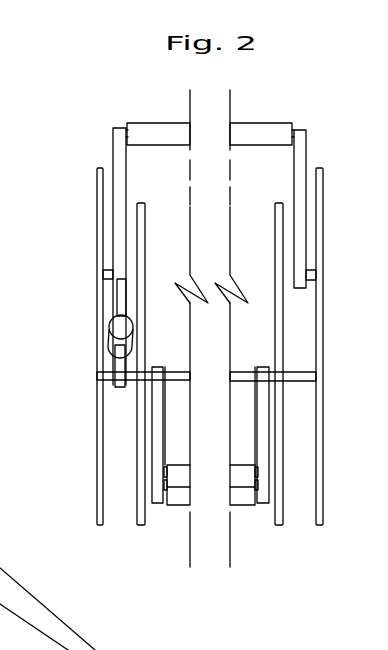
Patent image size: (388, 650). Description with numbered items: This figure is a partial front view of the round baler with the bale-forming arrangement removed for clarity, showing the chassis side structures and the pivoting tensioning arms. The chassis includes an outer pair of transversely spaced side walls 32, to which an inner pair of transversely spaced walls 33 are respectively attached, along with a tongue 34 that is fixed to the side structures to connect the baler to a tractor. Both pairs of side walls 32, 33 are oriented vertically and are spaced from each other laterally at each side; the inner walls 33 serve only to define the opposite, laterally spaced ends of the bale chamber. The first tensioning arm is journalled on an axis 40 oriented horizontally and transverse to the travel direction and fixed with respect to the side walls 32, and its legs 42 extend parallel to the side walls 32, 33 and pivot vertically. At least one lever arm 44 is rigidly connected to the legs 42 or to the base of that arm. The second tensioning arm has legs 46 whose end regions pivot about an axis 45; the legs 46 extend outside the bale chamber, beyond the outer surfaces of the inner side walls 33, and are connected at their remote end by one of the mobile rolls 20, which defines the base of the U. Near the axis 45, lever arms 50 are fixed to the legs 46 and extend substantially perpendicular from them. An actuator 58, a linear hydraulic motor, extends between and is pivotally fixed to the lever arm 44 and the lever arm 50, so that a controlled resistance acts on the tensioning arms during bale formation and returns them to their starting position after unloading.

The mobile roll 20 is at (148, 128).
The outer side walls 32 is at (97, 488).
The inner side walls 33 is at (137, 512).
The tongue 34 is at (47, 581).
The axis 40 is at (100, 377).
The legs 42 is at (157, 438).
The lever arm 44 is at (115, 366).
The axis 45 is at (107, 277).
The legs 46 is at (118, 163).
The lever arms 50 is at (118, 304).
The actuator 58 is at (113, 328).